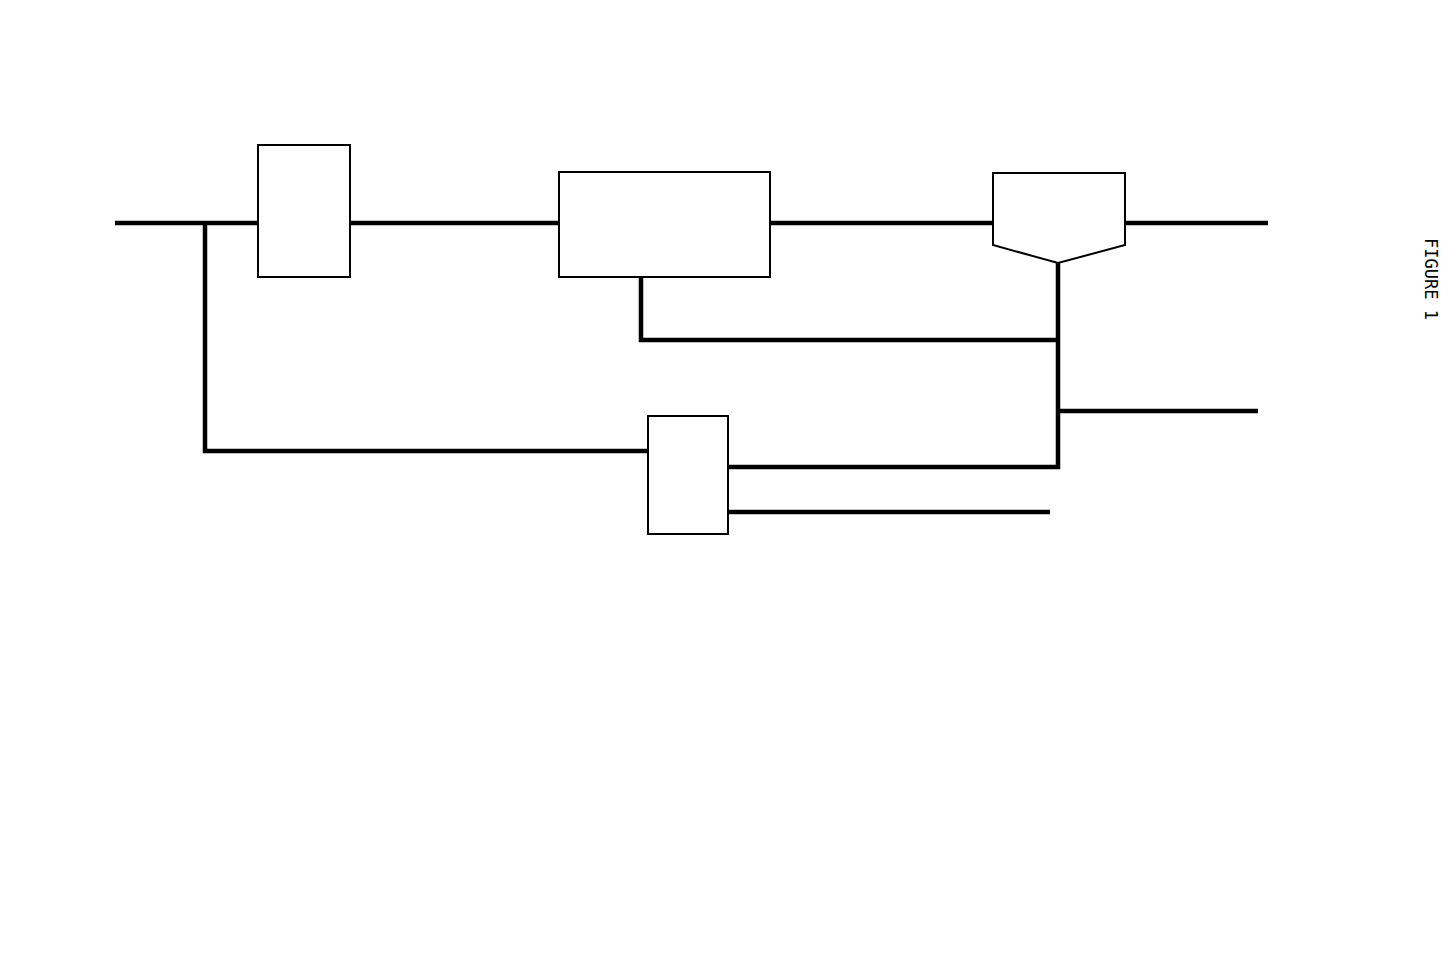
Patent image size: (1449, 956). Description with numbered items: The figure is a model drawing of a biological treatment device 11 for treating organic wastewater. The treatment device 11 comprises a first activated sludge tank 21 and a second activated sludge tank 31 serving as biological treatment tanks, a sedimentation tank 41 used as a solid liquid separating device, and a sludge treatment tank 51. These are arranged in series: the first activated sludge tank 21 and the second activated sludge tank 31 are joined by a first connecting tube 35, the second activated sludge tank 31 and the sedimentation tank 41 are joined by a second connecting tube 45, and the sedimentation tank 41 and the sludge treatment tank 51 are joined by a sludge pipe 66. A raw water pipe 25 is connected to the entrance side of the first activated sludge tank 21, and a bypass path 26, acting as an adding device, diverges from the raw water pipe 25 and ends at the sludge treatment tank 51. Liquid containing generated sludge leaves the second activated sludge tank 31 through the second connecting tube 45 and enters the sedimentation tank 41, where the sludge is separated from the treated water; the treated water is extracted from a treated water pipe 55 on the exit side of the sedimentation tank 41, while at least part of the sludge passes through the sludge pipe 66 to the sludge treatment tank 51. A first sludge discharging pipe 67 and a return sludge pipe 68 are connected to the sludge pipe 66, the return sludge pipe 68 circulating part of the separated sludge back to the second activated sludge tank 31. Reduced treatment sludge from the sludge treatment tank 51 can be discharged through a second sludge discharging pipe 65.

The biological treatment device 11 is at (703, 758).
The first activated sludge tank 21 is at (302, 145).
The raw water pipe 25 is at (155, 226).
The bypass path 26 is at (390, 451).
The second activated sludge tank 31 is at (661, 172).
The first connecting tube 35 is at (455, 226).
The sedimentation tank 41 is at (1050, 173).
The second connecting tube 45 is at (878, 226).
The sludge treatment tank 51 is at (684, 536).
The treated water pipe 55 is at (1218, 226).
The second sludge discharging pipe 65 is at (877, 514).
The sludge pipe 66 is at (1056, 391).
The first sludge discharging pipe 67 is at (1218, 411).
The return sludge pipe 68 is at (875, 343).